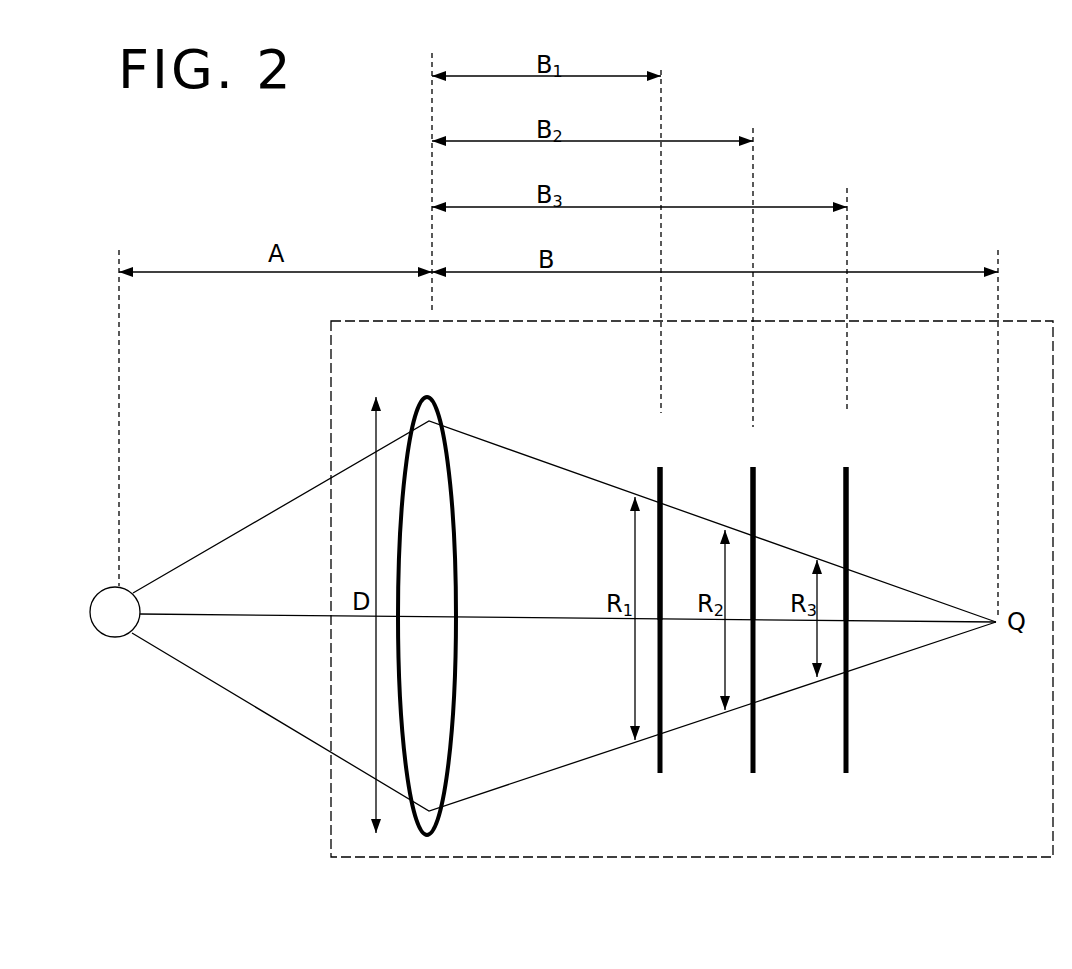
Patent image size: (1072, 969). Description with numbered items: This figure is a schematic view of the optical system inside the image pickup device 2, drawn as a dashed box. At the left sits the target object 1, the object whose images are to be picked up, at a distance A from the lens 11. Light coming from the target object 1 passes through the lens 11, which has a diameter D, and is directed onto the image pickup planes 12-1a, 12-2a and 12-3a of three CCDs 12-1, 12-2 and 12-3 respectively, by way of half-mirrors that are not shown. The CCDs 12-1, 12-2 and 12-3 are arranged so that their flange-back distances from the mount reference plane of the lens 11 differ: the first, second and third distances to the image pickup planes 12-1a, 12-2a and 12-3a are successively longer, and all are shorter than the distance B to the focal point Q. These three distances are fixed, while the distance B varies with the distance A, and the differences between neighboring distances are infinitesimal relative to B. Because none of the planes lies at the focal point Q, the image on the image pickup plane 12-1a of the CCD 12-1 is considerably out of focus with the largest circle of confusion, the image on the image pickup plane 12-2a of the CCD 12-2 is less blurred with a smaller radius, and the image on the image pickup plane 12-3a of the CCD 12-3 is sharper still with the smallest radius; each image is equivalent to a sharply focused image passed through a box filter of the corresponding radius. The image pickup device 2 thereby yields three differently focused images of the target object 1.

The target object 1 is at (113, 638).
The image pickup device 2 is at (679, 860).
The lens 11 is at (440, 406).
The CCD 12-1 is at (649, 622).
The image pickup plane 12-1a is at (657, 475).
The CCD 12-2 is at (747, 624).
The image pickup plane 12-2a is at (750, 486).
The CCD 12-3 is at (846, 620).
The image pickup plane 12-3a is at (845, 478).